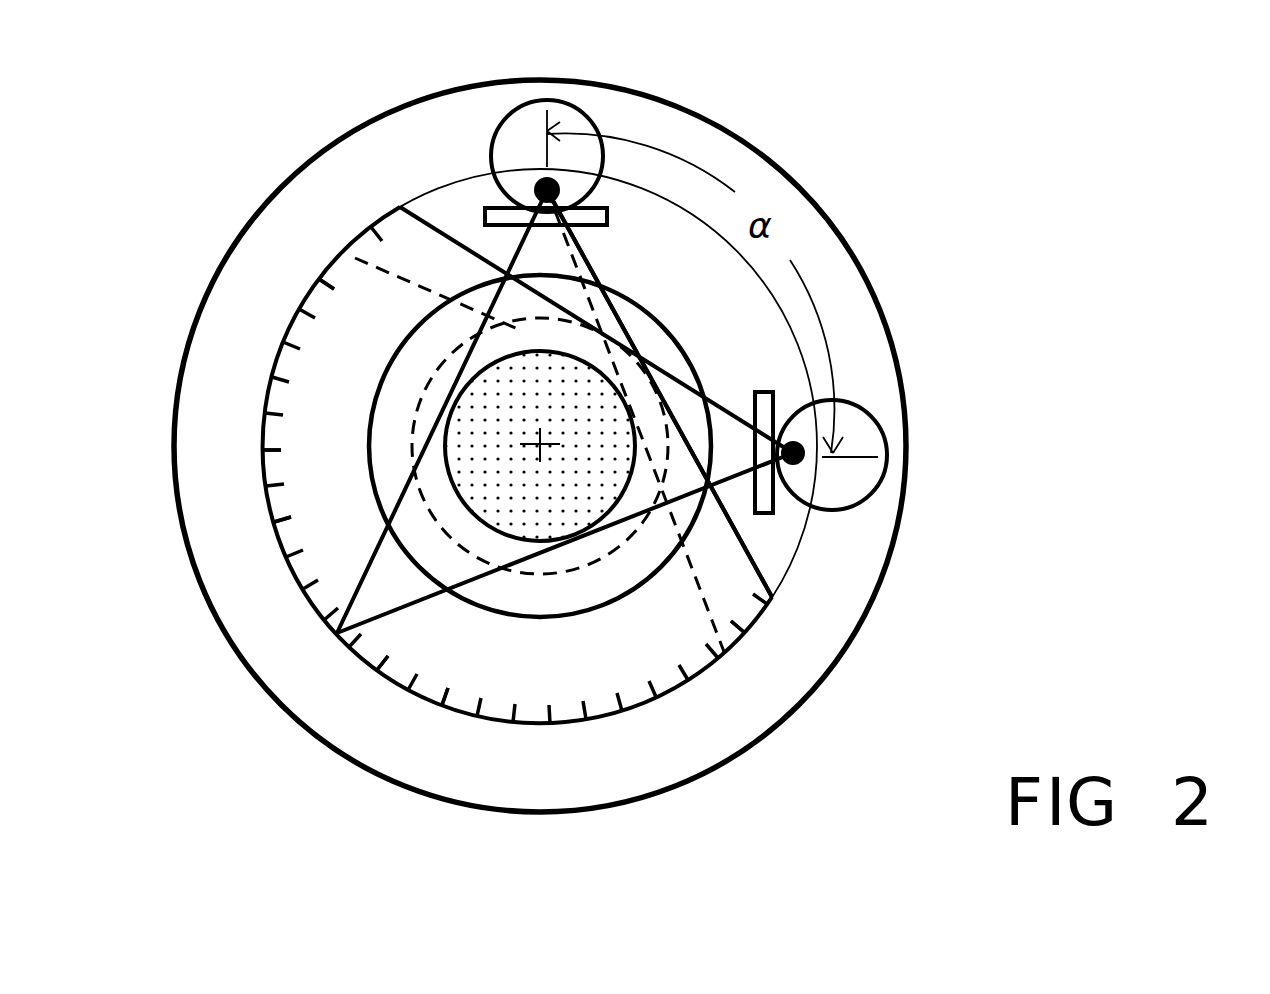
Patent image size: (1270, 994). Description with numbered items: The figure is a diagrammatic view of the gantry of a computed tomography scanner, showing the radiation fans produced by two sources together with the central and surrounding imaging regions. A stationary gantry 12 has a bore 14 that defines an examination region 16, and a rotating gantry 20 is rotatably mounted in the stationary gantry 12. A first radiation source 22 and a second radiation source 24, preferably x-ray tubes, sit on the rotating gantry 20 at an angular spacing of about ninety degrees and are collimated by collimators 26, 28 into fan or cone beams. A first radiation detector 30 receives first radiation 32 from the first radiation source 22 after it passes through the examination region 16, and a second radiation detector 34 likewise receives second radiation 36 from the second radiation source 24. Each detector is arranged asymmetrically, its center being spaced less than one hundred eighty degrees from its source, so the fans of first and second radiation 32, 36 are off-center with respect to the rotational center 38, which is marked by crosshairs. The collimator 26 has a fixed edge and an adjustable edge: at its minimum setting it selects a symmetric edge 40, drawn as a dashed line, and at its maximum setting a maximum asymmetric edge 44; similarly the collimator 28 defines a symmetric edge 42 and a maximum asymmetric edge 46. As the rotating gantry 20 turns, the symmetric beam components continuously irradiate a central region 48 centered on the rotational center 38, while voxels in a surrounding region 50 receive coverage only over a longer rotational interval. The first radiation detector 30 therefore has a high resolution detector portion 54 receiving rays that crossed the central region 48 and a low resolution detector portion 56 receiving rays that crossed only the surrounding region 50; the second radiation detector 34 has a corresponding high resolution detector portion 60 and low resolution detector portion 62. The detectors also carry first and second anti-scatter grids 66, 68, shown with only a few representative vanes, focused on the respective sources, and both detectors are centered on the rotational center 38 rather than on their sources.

The stationary gantry 12 is at (303, 690).
The bore 14 is at (372, 501).
The examination region 16 is at (516, 597).
The rotating gantry 20 is at (437, 222).
The first radiation source 22 is at (580, 106).
The second radiation source 24 is at (858, 508).
The collimator 26 is at (492, 208).
The collimator 28 is at (772, 512).
The first radiation detector 30 is at (565, 757).
The first radiation 32 is at (547, 262).
The second radiation detector 34 is at (238, 392).
The second radiation 36 is at (733, 447).
The rotational center 38 is at (541, 452).
The symmetric edge 40 is at (700, 602).
The symmetric edge 42 is at (392, 278).
The maximum asymmetric edge 44 is at (753, 567).
The maximum asymmetric edge 46 is at (433, 200).
The central region 48 is at (493, 360).
The surrounding region 50 is at (413, 412).
The high resolution detector portion 54 is at (613, 718).
The low resolution detector portion 56 is at (743, 636).
The high resolution detector portion 60 is at (290, 342).
The low resolution detector portion 62 is at (360, 233).
The first anti-scatter grid 66 is at (440, 688).
The second anti-scatter grid 68 is at (273, 513).